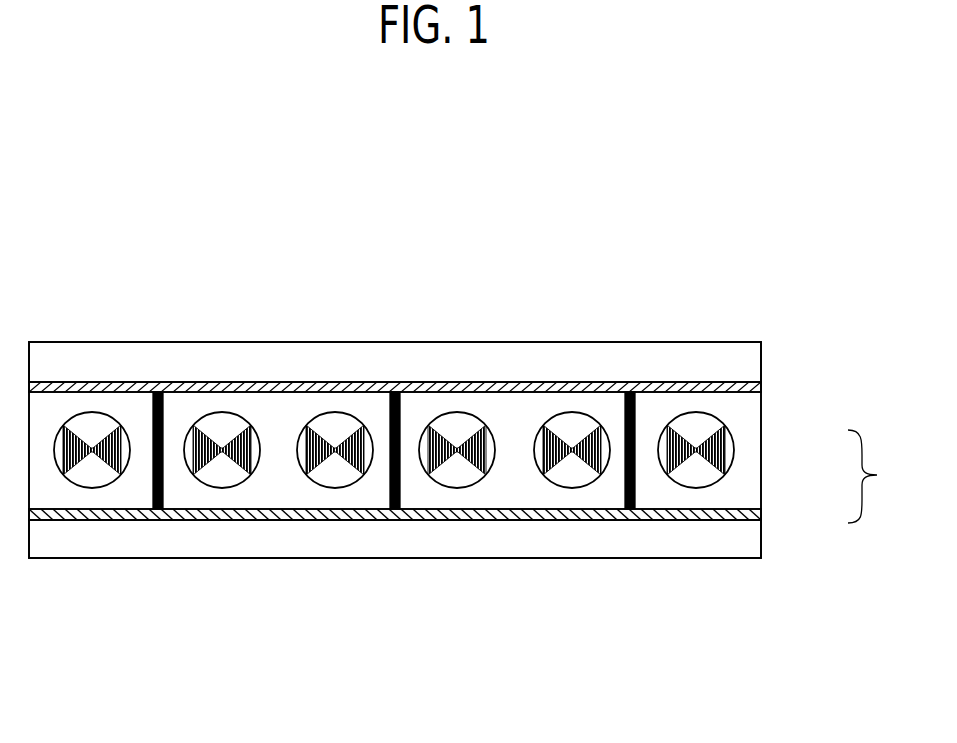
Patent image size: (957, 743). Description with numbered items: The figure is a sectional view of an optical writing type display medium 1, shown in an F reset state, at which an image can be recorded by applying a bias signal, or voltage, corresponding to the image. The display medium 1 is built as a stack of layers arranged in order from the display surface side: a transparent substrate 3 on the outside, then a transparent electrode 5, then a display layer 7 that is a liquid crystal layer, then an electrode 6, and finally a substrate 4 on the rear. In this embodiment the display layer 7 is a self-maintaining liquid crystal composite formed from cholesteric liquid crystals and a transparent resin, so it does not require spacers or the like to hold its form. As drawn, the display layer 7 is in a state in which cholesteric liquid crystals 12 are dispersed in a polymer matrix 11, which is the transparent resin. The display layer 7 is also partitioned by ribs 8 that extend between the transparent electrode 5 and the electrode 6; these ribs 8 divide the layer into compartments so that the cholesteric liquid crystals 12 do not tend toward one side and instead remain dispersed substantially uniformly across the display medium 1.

The display medium 1 is at (570, 312).
The transparent substrate 3 is at (748, 364).
The substrate 4 is at (743, 547).
The transparent electrode 5 is at (731, 411).
The electrode 6 is at (743, 521).
The display layer 7 is at (881, 476).
The ribs 8 is at (637, 477).
The polymer matrix 11 is at (747, 429).
The cholesteric liquid crystals 12 is at (735, 448).